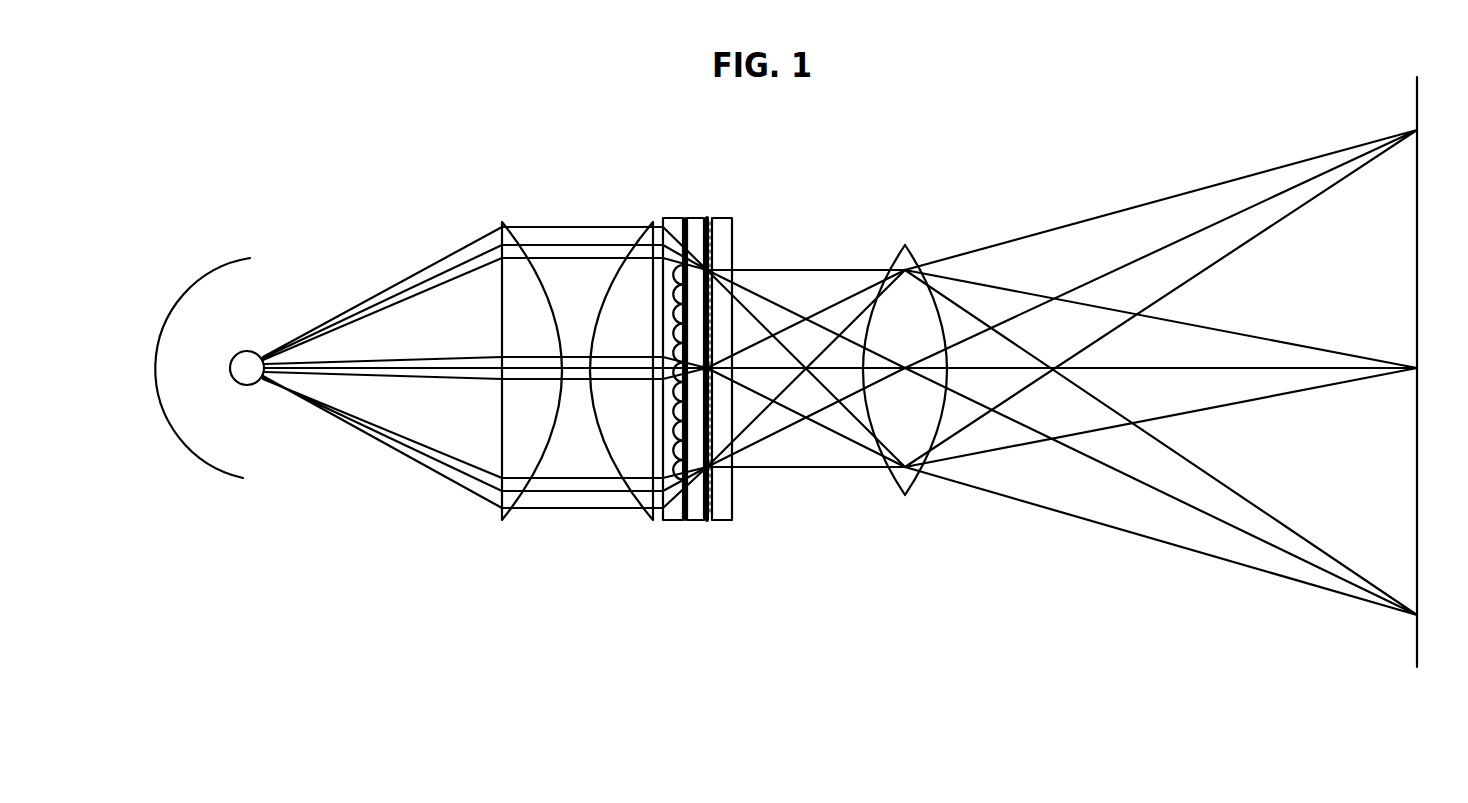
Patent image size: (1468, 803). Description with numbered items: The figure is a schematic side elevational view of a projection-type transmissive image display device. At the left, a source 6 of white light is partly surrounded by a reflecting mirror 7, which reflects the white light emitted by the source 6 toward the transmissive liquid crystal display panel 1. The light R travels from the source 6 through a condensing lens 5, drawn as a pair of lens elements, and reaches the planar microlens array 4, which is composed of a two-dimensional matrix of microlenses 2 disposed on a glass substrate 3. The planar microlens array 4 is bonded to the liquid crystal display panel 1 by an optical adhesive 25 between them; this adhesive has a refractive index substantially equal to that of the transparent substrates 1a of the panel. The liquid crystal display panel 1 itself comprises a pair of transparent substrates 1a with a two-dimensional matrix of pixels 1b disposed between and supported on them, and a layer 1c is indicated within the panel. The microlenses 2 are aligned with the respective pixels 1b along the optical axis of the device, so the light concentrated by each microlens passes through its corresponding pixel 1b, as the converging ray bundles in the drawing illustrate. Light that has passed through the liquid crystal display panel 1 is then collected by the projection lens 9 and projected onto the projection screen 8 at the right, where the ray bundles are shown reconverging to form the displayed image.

The transmissive liquid crystal display panel 1 is at (757, 375).
The transparent substrates 1a is at (719, 218).
The pixels 1b is at (707, 270).
The liquid crystal layer 1c is at (707, 270).
The microlenses 2 is at (630, 508).
The glass substrate 3 is at (666, 450).
The planar microlens array 4 is at (672, 520).
The condensing lens 5 is at (577, 364).
The source of white light 6 is at (254, 386).
The reflecting mirror 7 is at (243, 480).
The projection screen 8 is at (1415, 638).
The projection lens 9 is at (905, 496).
The optical adhesive 25 is at (684, 521).
The light ray R is at (413, 463).